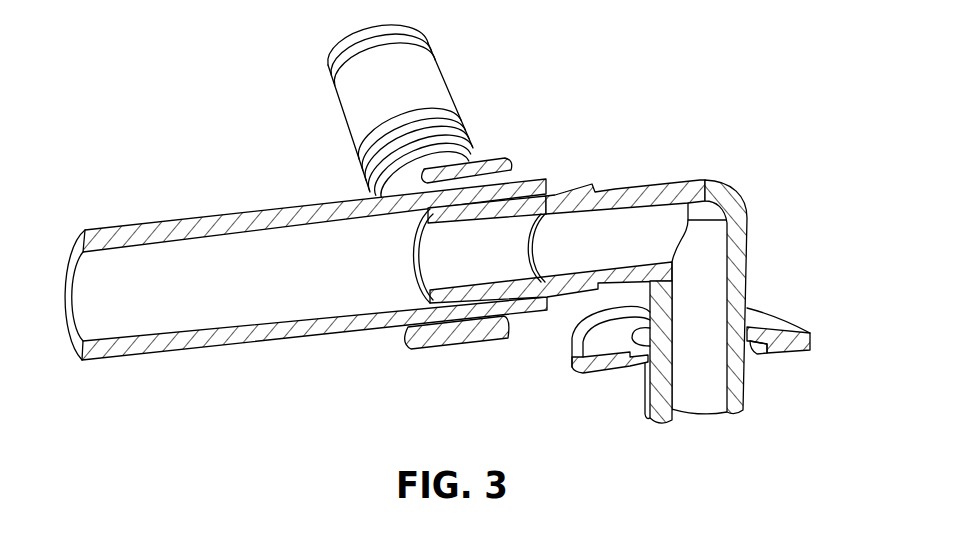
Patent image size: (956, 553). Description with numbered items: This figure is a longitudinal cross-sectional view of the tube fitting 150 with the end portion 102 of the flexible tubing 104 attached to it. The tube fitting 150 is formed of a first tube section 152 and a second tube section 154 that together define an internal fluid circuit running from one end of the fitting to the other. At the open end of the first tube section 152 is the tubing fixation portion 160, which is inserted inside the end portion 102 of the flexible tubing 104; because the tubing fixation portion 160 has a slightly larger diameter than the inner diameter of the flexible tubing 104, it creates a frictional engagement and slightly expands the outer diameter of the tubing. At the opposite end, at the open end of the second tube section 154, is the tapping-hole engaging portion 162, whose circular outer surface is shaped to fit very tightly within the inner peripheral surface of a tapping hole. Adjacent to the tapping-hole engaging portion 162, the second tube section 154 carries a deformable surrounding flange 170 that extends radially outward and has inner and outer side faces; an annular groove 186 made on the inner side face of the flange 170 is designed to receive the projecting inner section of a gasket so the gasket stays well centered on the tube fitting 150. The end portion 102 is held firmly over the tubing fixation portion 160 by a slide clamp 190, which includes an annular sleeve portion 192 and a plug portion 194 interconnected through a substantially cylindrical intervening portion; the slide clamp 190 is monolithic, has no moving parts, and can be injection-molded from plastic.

The end portion 102 is at (447, 231).
The flexible tubing 104 is at (149, 226).
The tube fitting 150 is at (622, 255).
The first tube section 152 is at (657, 179).
The second tube section 154 is at (740, 242).
The tubing fixation portion 160 is at (507, 270).
The tapping-hole engaging portion 162 is at (649, 408).
The deformable surrounding flange 170 is at (773, 311).
The annular groove 186 is at (751, 346).
The slide clamp 190 is at (406, 112).
The annular sleeve portion 192 is at (447, 336).
The plug portion 194 is at (352, 104).